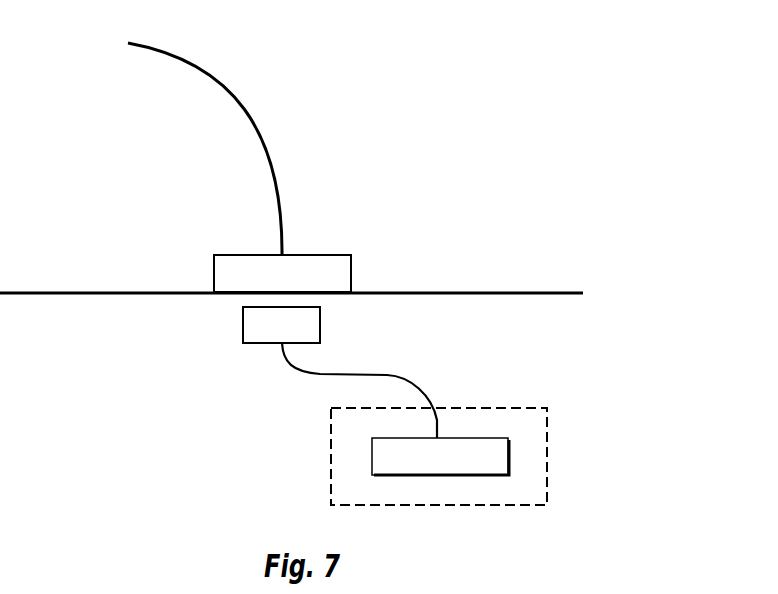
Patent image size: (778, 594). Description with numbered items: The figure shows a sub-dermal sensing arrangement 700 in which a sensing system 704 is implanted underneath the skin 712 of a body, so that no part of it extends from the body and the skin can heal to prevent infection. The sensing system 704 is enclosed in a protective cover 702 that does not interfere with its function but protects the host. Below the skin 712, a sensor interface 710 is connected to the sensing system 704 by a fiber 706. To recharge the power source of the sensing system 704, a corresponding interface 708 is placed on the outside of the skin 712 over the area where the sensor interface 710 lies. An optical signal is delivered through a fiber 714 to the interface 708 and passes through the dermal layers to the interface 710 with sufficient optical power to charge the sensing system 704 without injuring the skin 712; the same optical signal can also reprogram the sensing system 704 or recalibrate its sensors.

The sensing system 700 is at (559, 157).
The protective cover 702 is at (549, 438).
The sensing system 704 is at (509, 459).
The fiber 706 is at (387, 375).
The corresponding interface 708 is at (351, 269).
The sensor interface 710 is at (243, 321).
The skin 712 is at (513, 292).
The fiber 714 is at (265, 153).